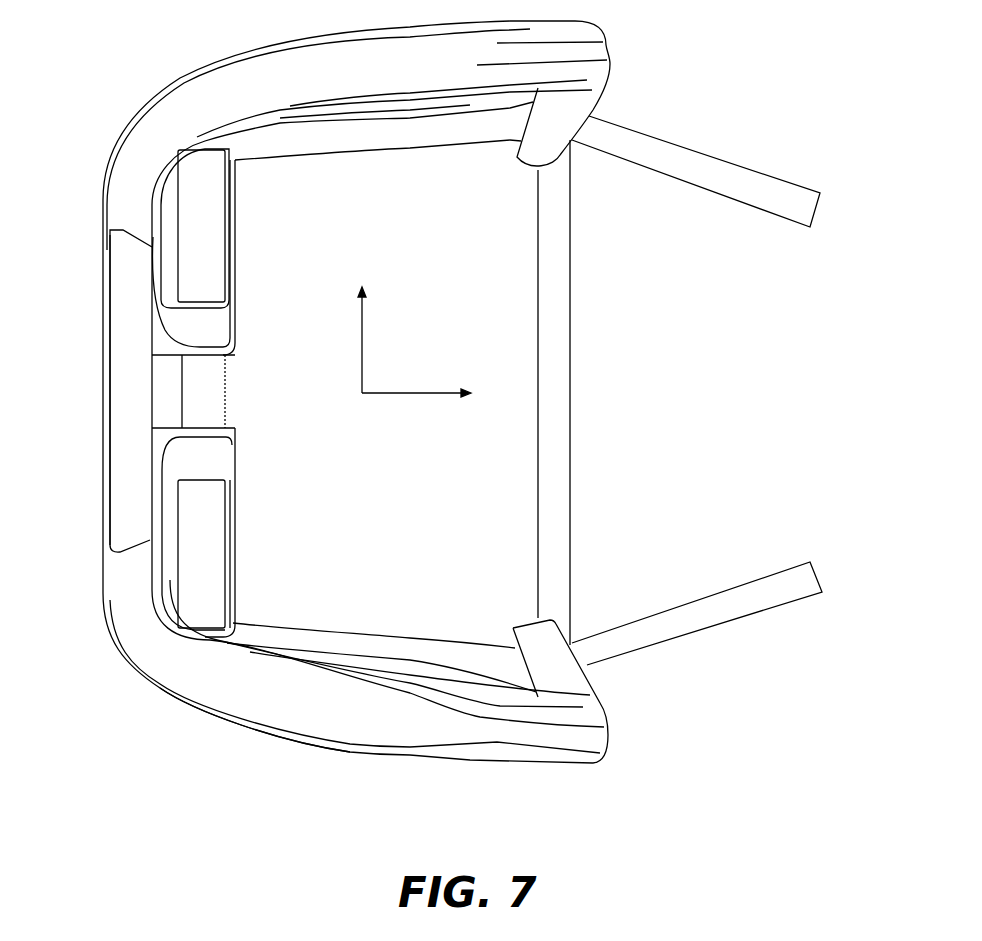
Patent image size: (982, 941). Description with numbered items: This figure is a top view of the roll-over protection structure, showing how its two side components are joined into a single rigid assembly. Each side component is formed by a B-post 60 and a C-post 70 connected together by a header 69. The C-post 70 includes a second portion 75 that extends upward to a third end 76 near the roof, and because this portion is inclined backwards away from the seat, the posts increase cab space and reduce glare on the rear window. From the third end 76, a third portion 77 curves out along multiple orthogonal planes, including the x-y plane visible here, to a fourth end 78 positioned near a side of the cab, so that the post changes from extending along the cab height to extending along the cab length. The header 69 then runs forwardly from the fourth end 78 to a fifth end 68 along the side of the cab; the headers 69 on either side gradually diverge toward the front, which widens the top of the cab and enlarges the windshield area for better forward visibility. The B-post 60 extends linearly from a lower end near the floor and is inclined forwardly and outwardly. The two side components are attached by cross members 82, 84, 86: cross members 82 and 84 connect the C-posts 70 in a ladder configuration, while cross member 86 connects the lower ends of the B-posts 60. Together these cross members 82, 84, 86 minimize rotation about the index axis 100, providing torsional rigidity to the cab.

The B-post 60 is at (620, 100).
The fifth end 68 is at (548, 752).
The header 69 is at (394, 739).
The C-post 70 is at (124, 95).
The second portion 75 is at (213, 452).
The third end 76 is at (180, 487).
The third portion 77 is at (134, 644).
The fourth end 78 is at (277, 713).
The cross member 82 is at (117, 404).
The cross member 84 is at (190, 404).
The cross member 86 is at (540, 413).
The index axis 100 is at (362, 393).